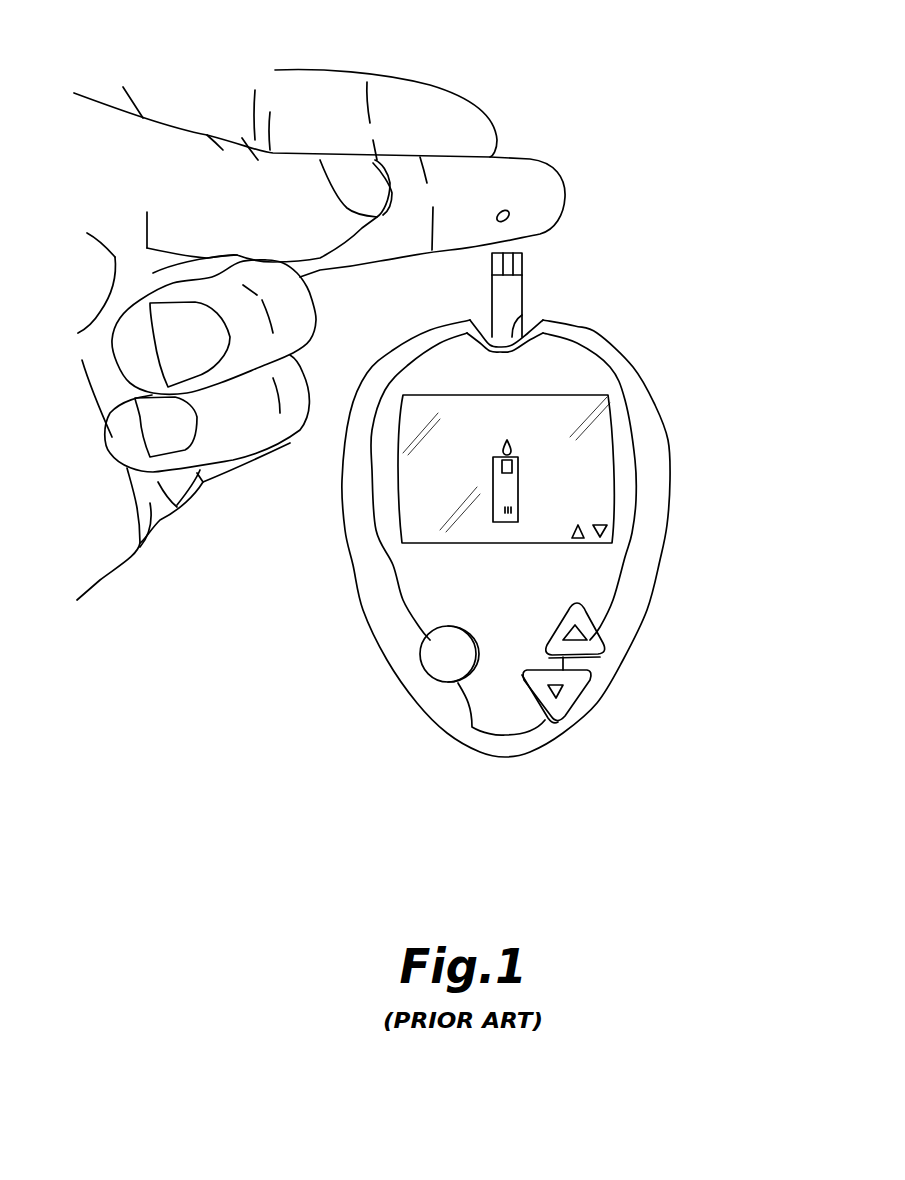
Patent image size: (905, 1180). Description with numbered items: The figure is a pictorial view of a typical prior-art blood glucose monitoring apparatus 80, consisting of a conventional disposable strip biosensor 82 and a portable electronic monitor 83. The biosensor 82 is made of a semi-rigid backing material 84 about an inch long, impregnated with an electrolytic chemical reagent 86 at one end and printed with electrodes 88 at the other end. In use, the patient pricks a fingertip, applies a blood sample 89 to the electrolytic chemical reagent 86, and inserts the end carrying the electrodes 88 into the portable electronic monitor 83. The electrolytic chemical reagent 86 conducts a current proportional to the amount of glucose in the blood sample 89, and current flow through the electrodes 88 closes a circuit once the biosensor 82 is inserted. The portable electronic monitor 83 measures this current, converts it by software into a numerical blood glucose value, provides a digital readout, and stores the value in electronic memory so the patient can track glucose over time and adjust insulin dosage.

The blood glucose monitoring apparatus 80 is at (672, 115).
The disposable strip biosensor 82 is at (560, 263).
The portable electronic monitor 83 is at (653, 537).
The semi-rigid backing material 84 is at (508, 300).
The electrolytic chemical reagent 86 is at (517, 253).
The electrodes 88 is at (520, 327).
The blood sample 89 is at (507, 208).